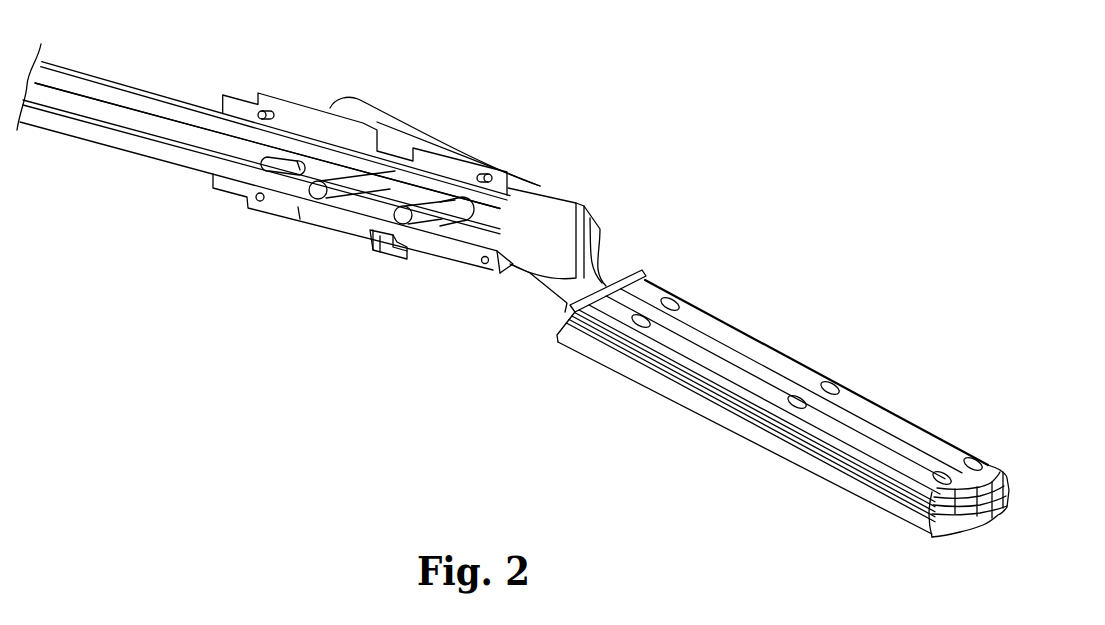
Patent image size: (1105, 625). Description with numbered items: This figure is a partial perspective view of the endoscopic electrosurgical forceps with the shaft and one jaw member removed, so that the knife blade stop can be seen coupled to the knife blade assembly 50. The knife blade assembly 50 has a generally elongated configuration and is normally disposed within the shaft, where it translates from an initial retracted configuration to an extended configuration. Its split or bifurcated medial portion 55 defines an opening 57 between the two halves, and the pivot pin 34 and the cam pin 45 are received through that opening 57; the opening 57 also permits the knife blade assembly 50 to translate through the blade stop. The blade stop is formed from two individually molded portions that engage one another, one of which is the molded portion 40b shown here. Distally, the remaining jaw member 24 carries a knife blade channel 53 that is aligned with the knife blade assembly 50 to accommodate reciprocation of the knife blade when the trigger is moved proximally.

The knife blade assembly 50 is at (83, 60).
The bifurcated medial portion 55 is at (202, 85).
The molded portion of blade stop 40b is at (365, 130).
The opening 57 is at (166, 129).
The cam pin 45 is at (315, 192).
The pivot pin 34 is at (372, 234).
The knife blade channel 53 is at (923, 450).
The jaw member 24 is at (1006, 512).